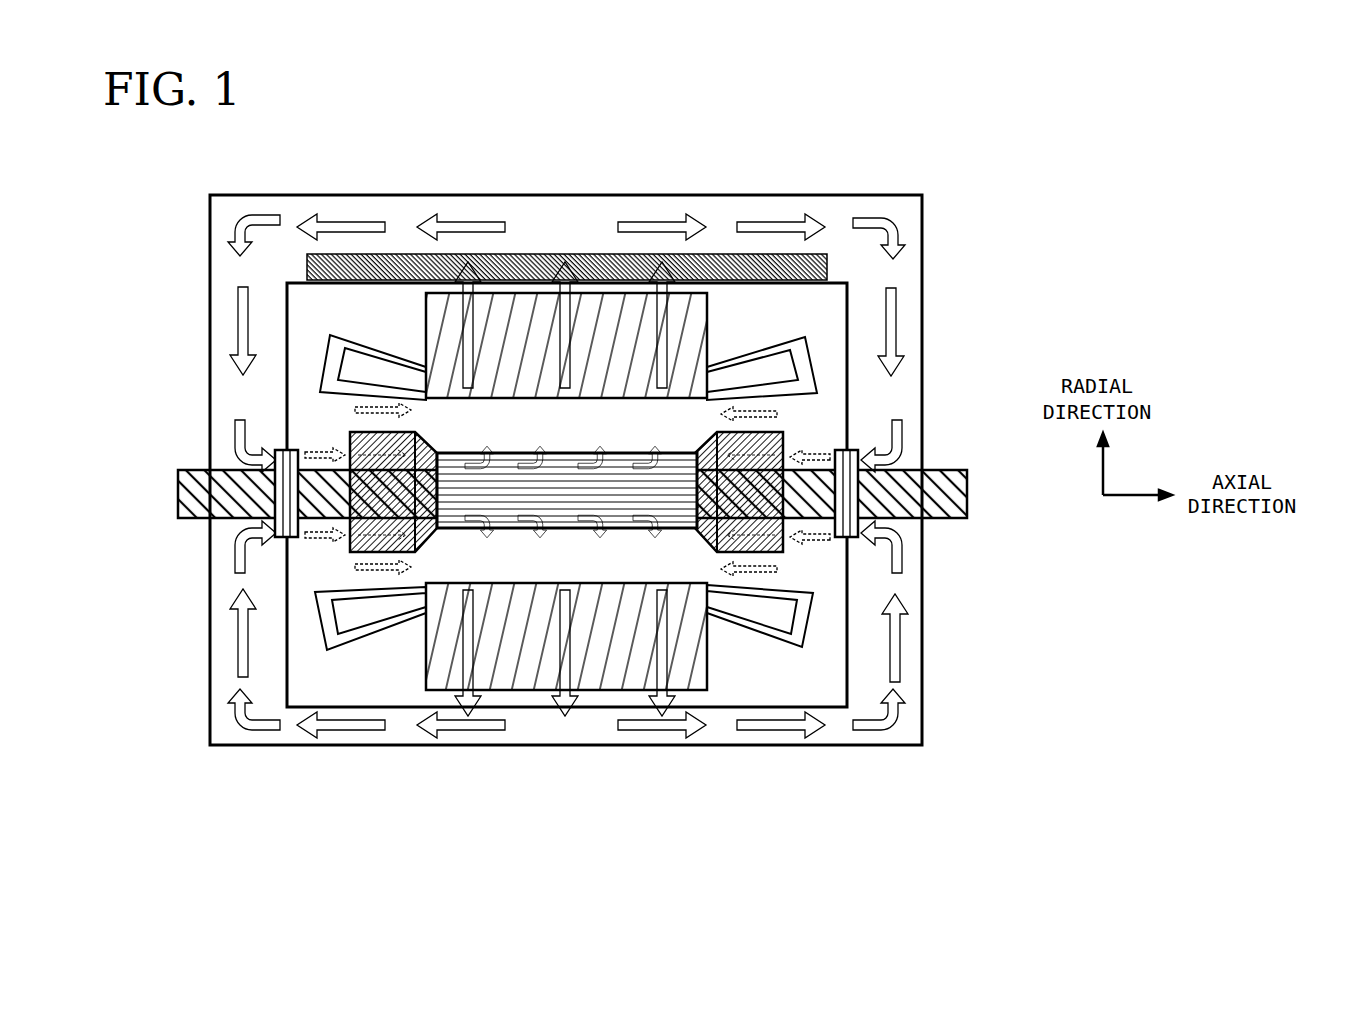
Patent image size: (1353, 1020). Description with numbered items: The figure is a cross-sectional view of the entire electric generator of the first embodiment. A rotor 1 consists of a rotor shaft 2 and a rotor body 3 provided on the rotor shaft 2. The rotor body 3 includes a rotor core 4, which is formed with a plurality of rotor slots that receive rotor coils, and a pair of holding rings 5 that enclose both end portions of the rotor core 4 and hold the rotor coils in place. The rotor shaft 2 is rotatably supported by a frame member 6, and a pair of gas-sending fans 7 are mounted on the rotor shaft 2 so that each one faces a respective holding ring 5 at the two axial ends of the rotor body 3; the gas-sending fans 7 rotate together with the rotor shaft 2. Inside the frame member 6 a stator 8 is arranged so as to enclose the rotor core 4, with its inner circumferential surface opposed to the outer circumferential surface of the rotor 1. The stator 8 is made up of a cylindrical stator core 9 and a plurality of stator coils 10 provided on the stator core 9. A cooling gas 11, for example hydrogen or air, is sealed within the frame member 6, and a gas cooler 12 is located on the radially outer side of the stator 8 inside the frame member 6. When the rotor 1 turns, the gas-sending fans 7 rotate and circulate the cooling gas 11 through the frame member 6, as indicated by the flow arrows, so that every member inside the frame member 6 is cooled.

The rotor 1 is at (580, 530).
The rotor shaft 2 is at (968, 492).
The rotor body 3 is at (477, 616).
The rotor core 4 is at (548, 500).
The holding ring 5 is at (350, 553).
The frame member 6 is at (766, 196).
The gas-sending fan 7 is at (858, 447).
The stator 8 is at (567, 418).
The stator core 9 is at (530, 300).
The stator coil 10 is at (394, 352).
The cooling gas 11 is at (893, 333).
The gas cooler 12 is at (601, 254).